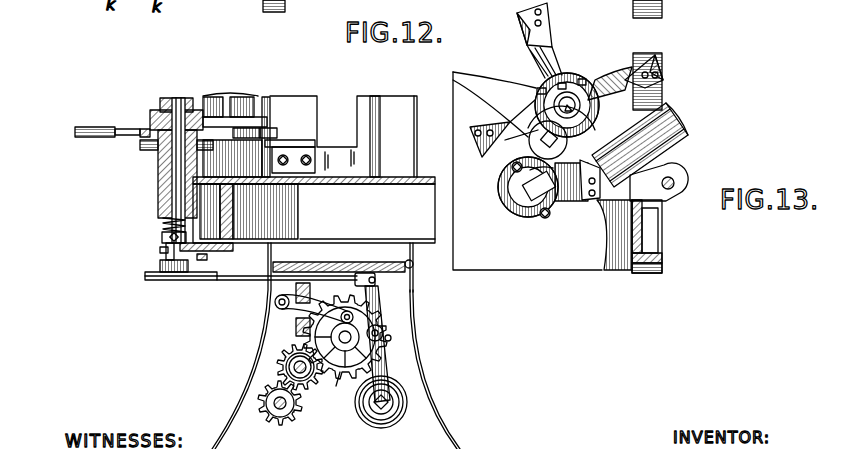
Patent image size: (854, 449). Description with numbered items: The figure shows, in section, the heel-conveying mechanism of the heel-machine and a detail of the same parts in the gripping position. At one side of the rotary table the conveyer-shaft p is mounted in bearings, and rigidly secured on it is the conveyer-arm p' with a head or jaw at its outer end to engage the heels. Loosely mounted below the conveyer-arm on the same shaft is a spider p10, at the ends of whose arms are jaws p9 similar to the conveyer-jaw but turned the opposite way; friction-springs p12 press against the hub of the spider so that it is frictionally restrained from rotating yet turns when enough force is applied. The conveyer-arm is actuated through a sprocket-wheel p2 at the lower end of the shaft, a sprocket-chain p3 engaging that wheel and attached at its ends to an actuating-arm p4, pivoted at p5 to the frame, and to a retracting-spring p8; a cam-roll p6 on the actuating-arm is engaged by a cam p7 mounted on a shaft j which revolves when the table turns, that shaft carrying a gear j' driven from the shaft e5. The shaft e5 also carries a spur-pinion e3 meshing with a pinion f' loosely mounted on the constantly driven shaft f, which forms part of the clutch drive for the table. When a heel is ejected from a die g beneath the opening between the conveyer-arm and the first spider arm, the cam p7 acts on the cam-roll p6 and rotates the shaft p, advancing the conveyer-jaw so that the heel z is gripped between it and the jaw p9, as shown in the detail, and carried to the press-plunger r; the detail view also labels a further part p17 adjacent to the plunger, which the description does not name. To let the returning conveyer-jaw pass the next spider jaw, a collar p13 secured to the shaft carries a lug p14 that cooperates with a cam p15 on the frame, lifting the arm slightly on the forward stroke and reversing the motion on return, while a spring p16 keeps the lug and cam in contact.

In FIG. 12, the spider jaw p9 is at (82, 127).
In FIG. 13, the spider jaw p9 is at (552, 30).
In FIG. 12, the spider p10 is at (138, 131).
In FIG. 13, the spider p10 is at (543, 58).
In FIG. 12, the conveyer-arm p' is at (149, 102).
In FIG. 13, the conveyer-arm p' is at (500, 161).
In FIG. 12, the sprocket-wheel p2 is at (215, 98).
In FIG. 12, the press-plunger r is at (236, 103).
In FIG. 13, the press-plunger r is at (674, 171).
In FIG. 12, the friction-spring p12 is at (143, 150).
In FIG. 12, the conveyer-shaft p is at (125, 200).
In FIG. 12, the spring p16 is at (162, 222).
In FIG. 12, the collar p13 is at (162, 234).
In FIG. 12, the lug p14 is at (162, 249).
In FIG. 12, the cam p15 is at (161, 262).
In FIG. 12, the sprocket-chain p3 is at (207, 282).
In FIG. 12, the retracting-spring p8 is at (323, 262).
In FIG. 12, the actuating-arm p4 is at (372, 299).
In FIG. 12, the cam p7 is at (383, 323).
In FIG. 12, the cam-roll p6 is at (390, 338).
In FIG. 12, the shaft j is at (352, 339).
In FIG. 12, the gear j' is at (332, 390).
In FIG. 12, the shaft e5 is at (282, 353).
In FIG. 12, the spur-pinion e3 is at (289, 367).
In FIG. 12, the shaft f is at (248, 403).
In FIG. 12, the pinion f' is at (295, 421).
In FIG. 12, the pivot p5 is at (392, 398).
In FIG. 13, the cylinder p17 is at (655, 125).
In FIG. 13, the die g is at (523, 213).
In FIG. 13, the heel z is at (576, 198).